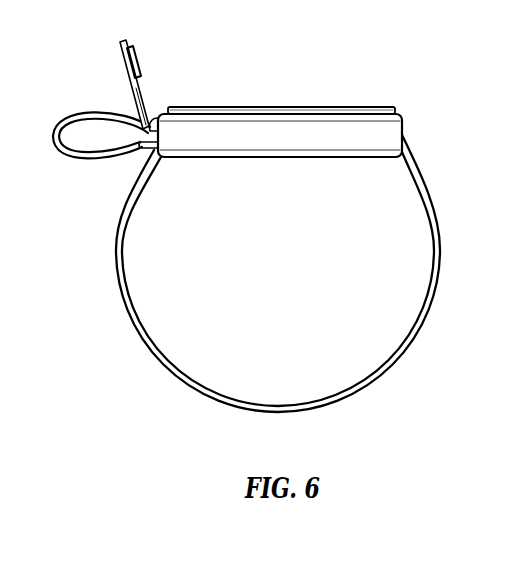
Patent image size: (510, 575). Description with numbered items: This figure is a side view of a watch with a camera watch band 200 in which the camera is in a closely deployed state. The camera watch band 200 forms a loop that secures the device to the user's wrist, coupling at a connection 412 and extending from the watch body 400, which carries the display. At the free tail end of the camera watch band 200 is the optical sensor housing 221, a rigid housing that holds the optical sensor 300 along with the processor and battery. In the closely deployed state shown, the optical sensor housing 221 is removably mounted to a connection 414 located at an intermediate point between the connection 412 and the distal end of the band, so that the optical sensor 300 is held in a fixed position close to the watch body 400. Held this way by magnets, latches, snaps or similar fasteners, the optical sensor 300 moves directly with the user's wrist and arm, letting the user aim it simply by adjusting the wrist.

The camera watch band 200 is at (115, 257).
The watch body 400 is at (370, 127).
The optical sensor housing 221 is at (119, 55).
The optical sensor 300 is at (140, 57).
The connection 414 is at (160, 111).
The connection 412 is at (141, 146).